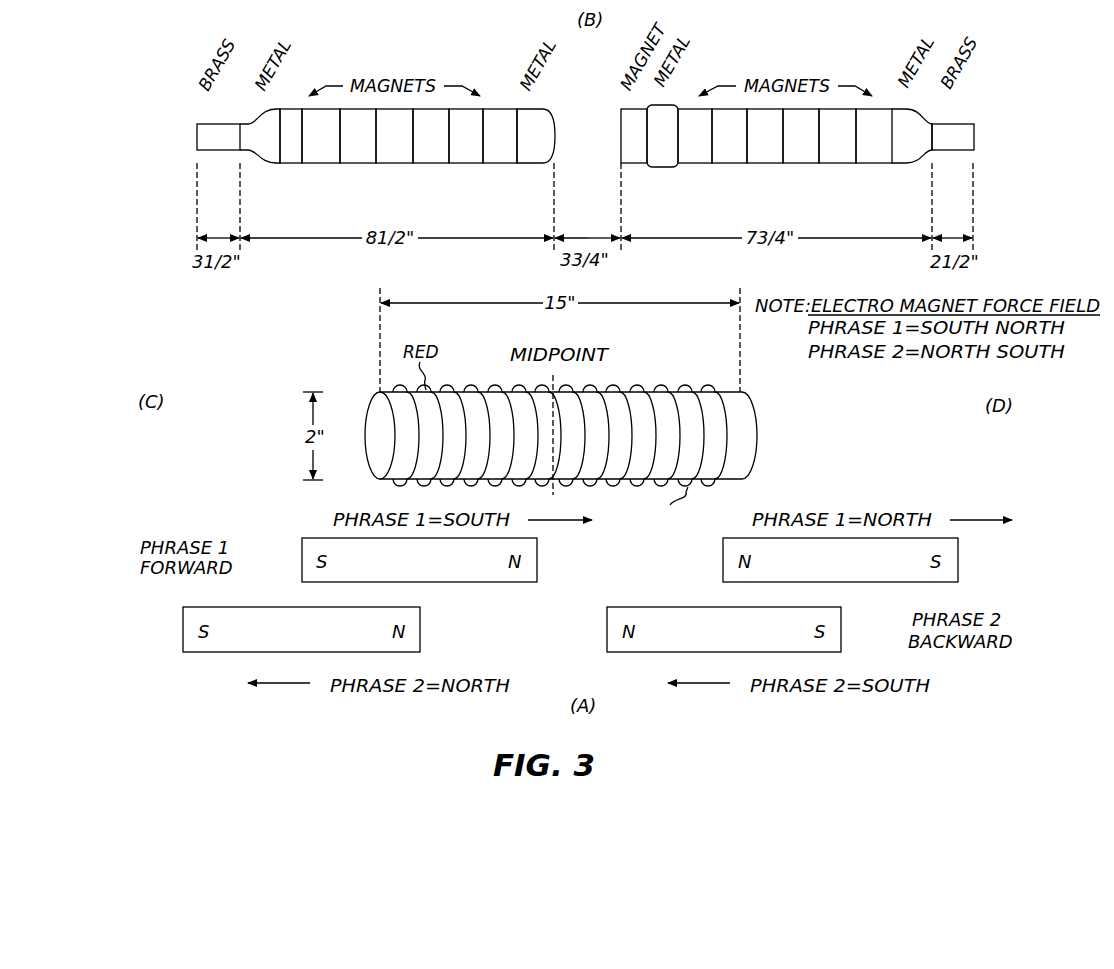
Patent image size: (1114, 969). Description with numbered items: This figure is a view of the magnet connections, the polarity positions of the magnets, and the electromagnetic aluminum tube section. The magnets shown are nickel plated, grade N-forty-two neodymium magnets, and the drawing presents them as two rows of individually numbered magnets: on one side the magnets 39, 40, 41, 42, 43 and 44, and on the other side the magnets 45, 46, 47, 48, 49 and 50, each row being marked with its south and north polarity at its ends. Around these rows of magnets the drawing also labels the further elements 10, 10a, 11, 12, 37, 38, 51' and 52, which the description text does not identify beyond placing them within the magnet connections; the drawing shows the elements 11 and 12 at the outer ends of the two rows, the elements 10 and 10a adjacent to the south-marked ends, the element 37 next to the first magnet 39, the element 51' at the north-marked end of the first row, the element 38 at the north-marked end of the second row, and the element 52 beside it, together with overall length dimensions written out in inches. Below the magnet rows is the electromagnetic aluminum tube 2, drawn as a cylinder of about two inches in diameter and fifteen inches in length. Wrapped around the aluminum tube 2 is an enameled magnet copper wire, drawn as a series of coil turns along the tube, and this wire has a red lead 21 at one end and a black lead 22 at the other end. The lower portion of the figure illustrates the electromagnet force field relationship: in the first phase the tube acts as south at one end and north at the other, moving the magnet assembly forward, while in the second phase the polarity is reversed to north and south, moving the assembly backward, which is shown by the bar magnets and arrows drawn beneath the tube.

The left brass end piece 11 is at (193, 134).
The left metal end (south pole) 10 is at (255, 160).
The spacer between metal end and magnets 37 is at (292, 163).
The magnet 39 is at (321, 136).
The magnet 40 is at (358, 136).
The magnet 41 is at (394, 136).
The magnet 42 is at (431, 136).
The magnet 43 is at (466, 136).
The magnet 44 is at (500, 136).
The metal end of left assembly (north pole) 51' is at (560, 136).
The metal end of right assembly (north pole) 38 is at (619, 153).
The magnet/metal collar 52 is at (661, 168).
The magnet 45 is at (695, 136).
The magnet 46 is at (729, 136).
The magnet 47 is at (765, 136).
The magnet 48 is at (801, 136).
The magnet 49 is at (837, 136).
The magnet 50 is at (874, 136).
The right metal end (south pole) 10a is at (920, 164).
The right brass end piece 12 is at (977, 136).
The red lead 21 is at (374, 350).
The electromagnetic aluminum tube 2 is at (482, 390).
The black lead 22 is at (665, 522).